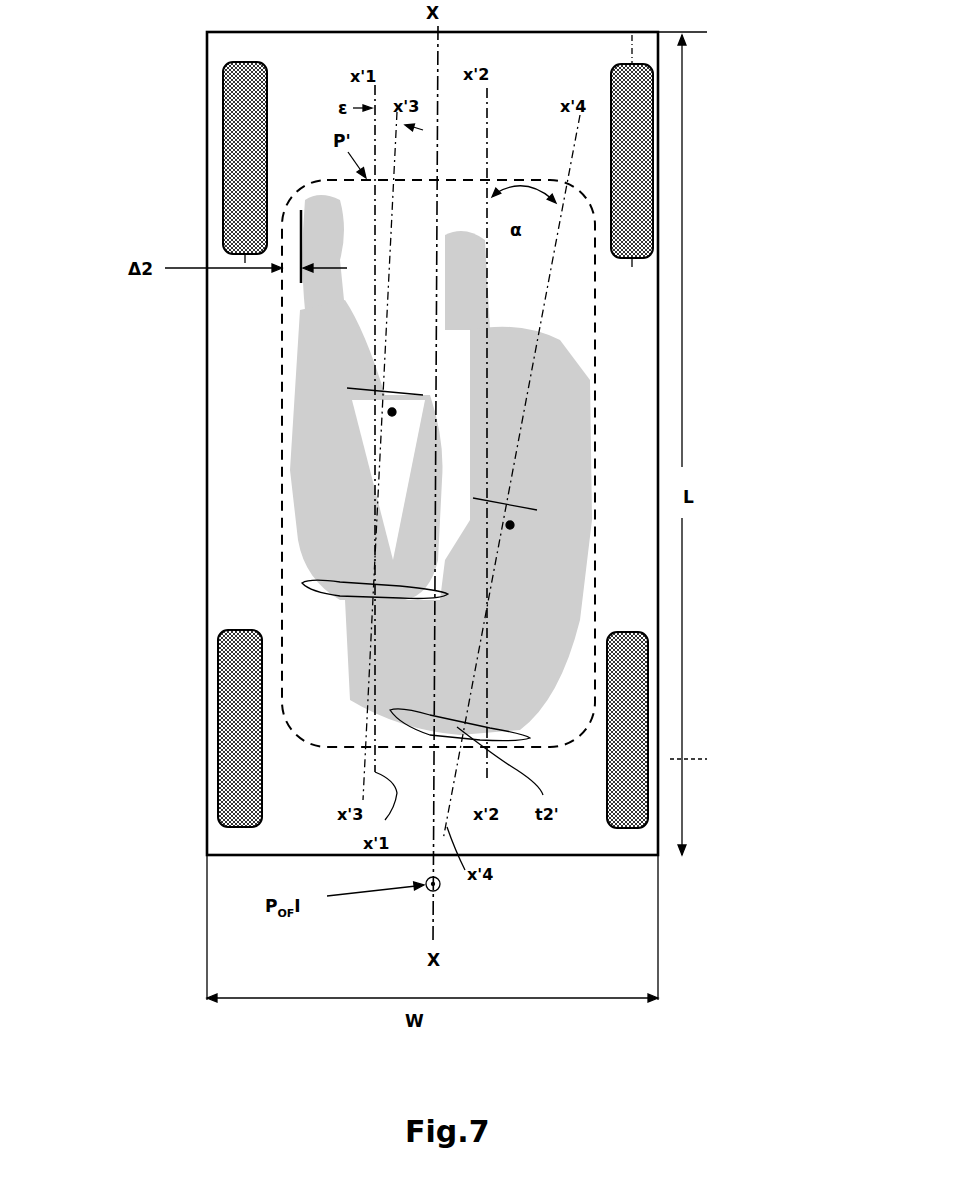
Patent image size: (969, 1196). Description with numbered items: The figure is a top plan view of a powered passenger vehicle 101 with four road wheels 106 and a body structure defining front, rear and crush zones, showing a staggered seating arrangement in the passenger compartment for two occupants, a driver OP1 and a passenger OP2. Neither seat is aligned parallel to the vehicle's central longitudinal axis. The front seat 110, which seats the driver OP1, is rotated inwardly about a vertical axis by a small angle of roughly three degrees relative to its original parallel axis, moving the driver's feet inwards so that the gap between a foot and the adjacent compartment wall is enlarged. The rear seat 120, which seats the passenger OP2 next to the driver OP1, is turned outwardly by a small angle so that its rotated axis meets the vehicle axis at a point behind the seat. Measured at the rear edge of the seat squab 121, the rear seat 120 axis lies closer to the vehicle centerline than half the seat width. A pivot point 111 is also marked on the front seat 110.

The powered passenger vehicle 101 is at (200, 105).
The road wheels 106 is at (227, 170).
The front seat 110 is at (417, 380).
The first handlebar pivot point 111 is at (391, 409).
The rear seat 120 is at (527, 492).
The seat squab 121 is at (509, 521).
The driver OP1 is at (283, 468).
The passenger OP2 is at (595, 490).